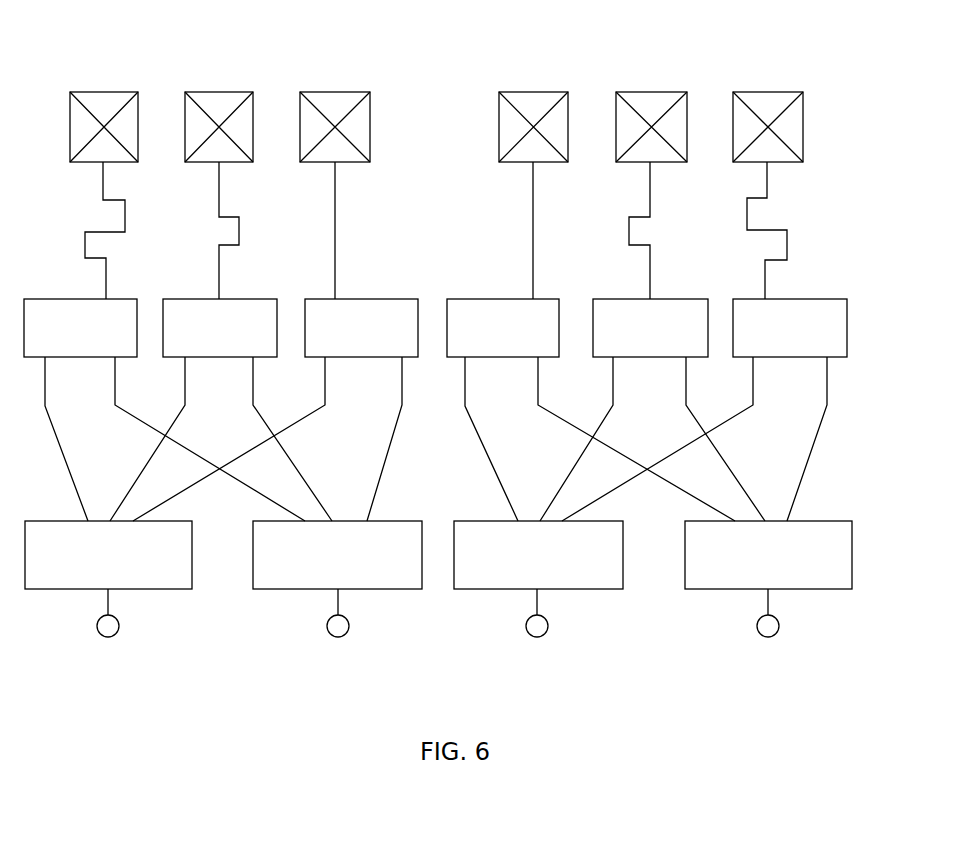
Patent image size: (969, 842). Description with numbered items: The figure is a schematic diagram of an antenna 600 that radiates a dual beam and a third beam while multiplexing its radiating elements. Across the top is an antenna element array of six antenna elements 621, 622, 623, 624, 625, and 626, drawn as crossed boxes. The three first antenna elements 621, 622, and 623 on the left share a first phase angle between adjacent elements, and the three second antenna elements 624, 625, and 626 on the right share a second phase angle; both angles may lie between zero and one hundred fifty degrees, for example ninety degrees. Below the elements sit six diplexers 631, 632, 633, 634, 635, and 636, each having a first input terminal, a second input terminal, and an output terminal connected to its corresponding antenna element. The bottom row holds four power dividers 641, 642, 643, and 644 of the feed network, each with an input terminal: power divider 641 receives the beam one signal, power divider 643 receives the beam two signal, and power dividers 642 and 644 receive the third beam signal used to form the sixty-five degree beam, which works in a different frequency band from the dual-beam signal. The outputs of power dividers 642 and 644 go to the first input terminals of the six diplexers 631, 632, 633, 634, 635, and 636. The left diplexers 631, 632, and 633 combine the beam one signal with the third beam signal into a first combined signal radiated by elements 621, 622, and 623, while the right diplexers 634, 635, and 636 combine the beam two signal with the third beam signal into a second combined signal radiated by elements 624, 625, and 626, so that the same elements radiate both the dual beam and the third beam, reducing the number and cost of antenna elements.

The antenna 600 is at (470, 80).
The first antenna element 621 is at (104, 195).
The first antenna element 622 is at (219, 195).
The first antenna element 623 is at (335, 195).
The second antenna element 624 is at (533, 195).
The second antenna element 625 is at (651, 195).
The second antenna element 626 is at (768, 195).
The diplexer 631 is at (164, 410).
The diplexer 632 is at (221, 410).
The diplexer 633 is at (275, 410).
The diplexer 634 is at (591, 410).
The diplexer 635 is at (652, 410).
The diplexer 636 is at (704, 410).
The power divider 641 is at (153, 568).
The power divider 642 is at (388, 547).
The power divider 643 is at (585, 562).
The power divider 644 is at (818, 559).